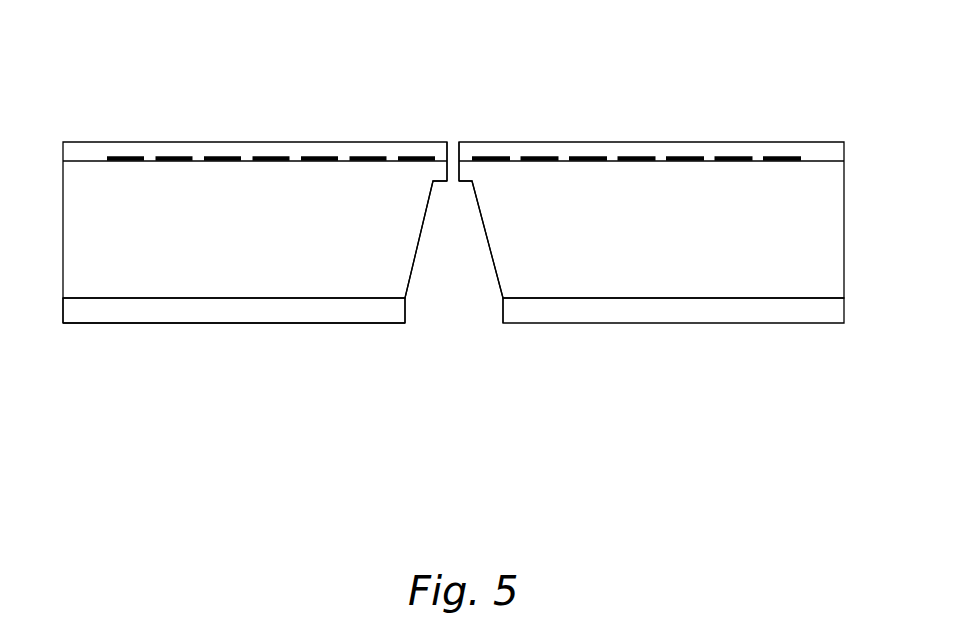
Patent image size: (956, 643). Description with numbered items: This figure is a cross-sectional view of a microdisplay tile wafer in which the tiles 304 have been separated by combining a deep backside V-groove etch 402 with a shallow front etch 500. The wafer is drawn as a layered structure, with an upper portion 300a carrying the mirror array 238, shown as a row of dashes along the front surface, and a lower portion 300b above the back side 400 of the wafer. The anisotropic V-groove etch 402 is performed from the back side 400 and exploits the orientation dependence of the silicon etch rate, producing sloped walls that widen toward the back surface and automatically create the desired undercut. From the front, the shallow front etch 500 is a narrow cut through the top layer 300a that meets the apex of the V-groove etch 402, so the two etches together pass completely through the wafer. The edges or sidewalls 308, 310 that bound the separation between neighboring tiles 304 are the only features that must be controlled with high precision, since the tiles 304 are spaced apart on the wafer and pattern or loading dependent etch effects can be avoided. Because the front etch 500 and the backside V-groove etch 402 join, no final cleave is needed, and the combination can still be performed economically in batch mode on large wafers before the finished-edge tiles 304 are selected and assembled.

The mirror array 238 is at (220, 157).
The upper layer of panel 300a is at (343, 146).
The lower layer of panel 300b is at (307, 307).
The microdisplay tile 304 is at (76, 323).
The sidewall 308 is at (447, 172).
The sidewall 310 is at (460, 172).
The back side 400 is at (666, 323).
The V-groove etch 402 is at (459, 273).
The shallow front etch 500 is at (454, 145).